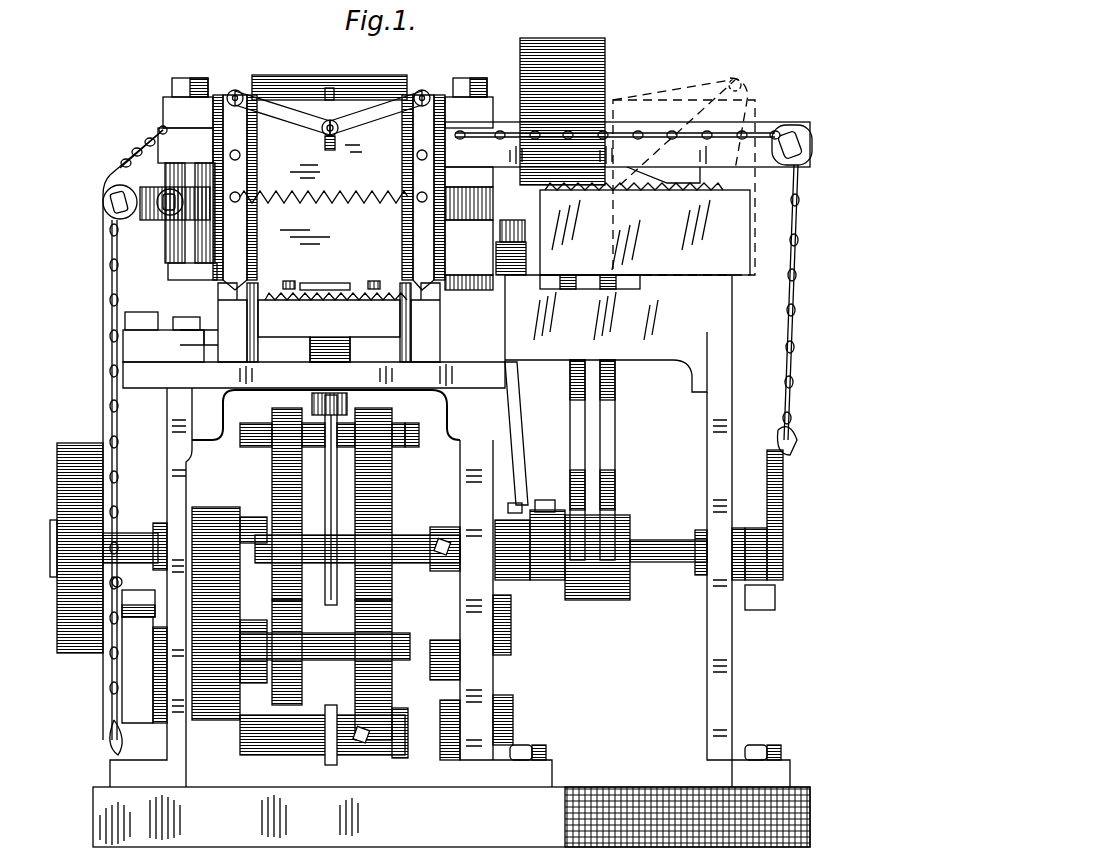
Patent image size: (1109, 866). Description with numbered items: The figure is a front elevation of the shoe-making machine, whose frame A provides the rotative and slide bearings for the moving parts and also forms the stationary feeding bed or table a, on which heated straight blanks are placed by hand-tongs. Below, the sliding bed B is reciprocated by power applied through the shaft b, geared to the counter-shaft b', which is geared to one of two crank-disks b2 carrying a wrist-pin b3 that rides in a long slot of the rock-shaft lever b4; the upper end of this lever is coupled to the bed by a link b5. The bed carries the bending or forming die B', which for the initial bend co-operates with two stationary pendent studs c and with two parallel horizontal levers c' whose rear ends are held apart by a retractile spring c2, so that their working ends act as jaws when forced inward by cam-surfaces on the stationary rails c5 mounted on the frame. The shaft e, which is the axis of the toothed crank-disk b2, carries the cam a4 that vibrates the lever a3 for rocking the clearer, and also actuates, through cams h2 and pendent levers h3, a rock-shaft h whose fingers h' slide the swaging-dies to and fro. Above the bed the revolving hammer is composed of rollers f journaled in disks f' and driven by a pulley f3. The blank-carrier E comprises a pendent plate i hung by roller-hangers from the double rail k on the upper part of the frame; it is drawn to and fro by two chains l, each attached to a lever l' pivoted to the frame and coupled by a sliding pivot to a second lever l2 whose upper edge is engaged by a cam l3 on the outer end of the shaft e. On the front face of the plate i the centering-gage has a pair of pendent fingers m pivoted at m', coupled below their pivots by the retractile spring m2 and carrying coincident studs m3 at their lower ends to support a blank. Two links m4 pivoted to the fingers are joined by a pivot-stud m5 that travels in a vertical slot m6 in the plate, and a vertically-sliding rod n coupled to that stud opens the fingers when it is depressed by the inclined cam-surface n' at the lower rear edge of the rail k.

The frame A is at (451, 462).
The blank-carrier E is at (329, 192).
The pendent fingers m is at (329, 230).
The finger pivots m' is at (330, 148).
The retractile spring m2 is at (324, 190).
The coincident studs m3 is at (258, 275).
The links m4 is at (328, 112).
The pivot-stud m5 is at (319, 134).
The vertical slot m6 is at (334, 150).
The carrier block or plate i is at (354, 221).
The stationary pendent studs c is at (329, 169).
The horizontal levers c' is at (330, 322).
The retractile spring c2 is at (336, 307).
The stationary rails or bars c5 is at (310, 322).
The vertically-sliding rod or bar n is at (328, 77).
The inclined plane or cam-surface n' is at (647, 176).
The rollers f is at (348, 90).
The disks f' is at (324, 67).
The driving-pulley f3 is at (562, 101).
The sliding bed B is at (329, 331).
The bending or forming die B' is at (325, 274).
The double rail k is at (628, 144).
The feeding bed or table a is at (593, 283).
The lever a3 is at (521, 433).
The lever end a4 is at (515, 518).
The rock-shaft h is at (502, 231).
The fingers h' is at (511, 258).
The cams h2 is at (580, 600).
The pendent levers h3 is at (592, 460).
The chains l is at (147, 440).
The lever l' is at (460, 435).
The second pivoted lever l2 is at (448, 601).
The cams l3 is at (439, 550).
The shaft b is at (357, 549).
The counter-shaft b' is at (325, 646).
The crank-disks b2 is at (323, 504).
The wrist-pin b3 is at (415, 423).
The rock-shaft lever b4 is at (325, 500).
The link b5 is at (347, 398).
The shaft e is at (668, 550).